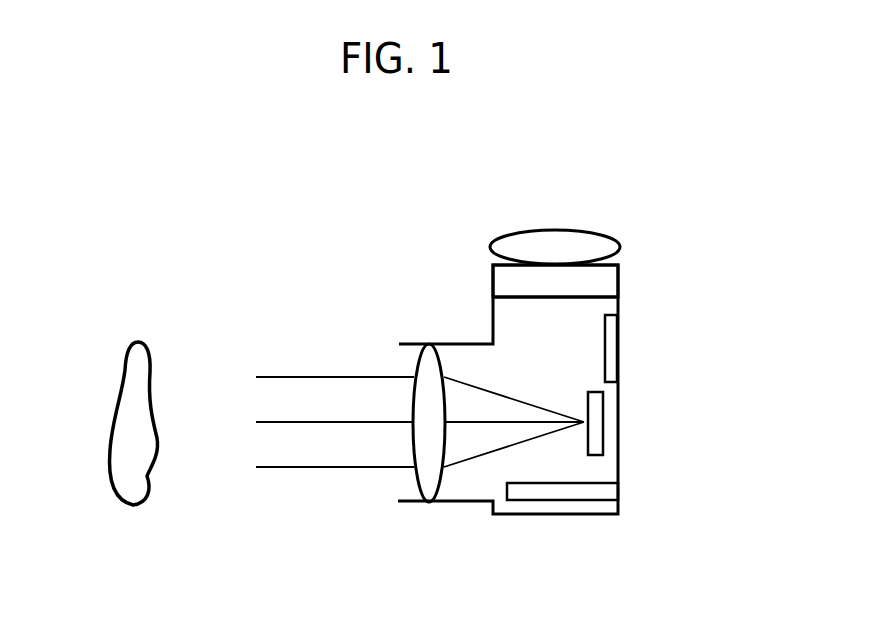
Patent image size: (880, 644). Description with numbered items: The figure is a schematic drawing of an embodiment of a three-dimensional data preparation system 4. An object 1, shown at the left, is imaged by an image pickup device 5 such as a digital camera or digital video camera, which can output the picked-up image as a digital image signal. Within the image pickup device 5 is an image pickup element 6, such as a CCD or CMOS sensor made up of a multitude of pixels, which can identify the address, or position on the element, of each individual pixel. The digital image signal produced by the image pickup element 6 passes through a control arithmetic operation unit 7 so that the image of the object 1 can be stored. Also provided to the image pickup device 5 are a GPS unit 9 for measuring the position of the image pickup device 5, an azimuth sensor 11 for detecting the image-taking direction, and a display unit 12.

The object 1 is at (140, 342).
The 3-dimensional data preparation system 4 is at (313, 170).
The image pickup device 5 is at (468, 340).
The image pickup element 6 is at (588, 405).
The control arithmetic operation unit 7 is at (593, 482).
The GPS unit 9 is at (563, 230).
The azimuth sensor 11 is at (620, 283).
The display unit 12 is at (617, 346).